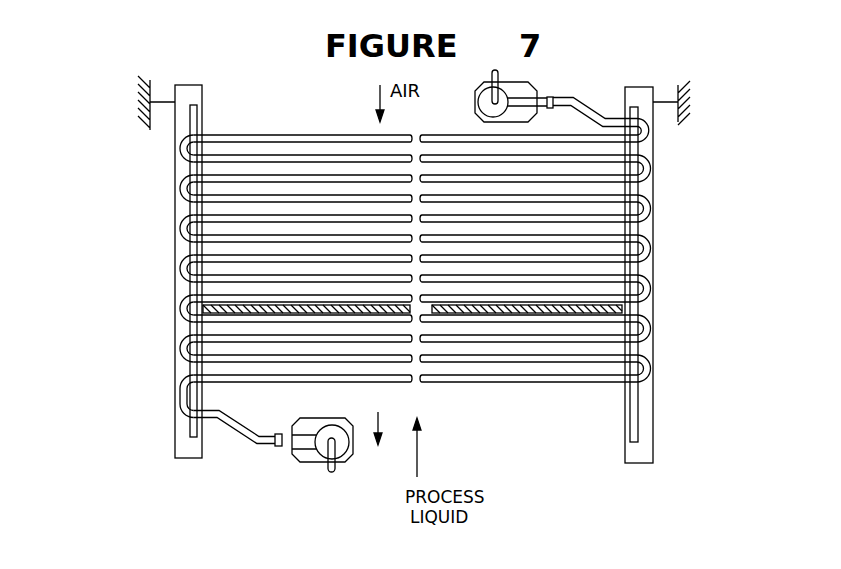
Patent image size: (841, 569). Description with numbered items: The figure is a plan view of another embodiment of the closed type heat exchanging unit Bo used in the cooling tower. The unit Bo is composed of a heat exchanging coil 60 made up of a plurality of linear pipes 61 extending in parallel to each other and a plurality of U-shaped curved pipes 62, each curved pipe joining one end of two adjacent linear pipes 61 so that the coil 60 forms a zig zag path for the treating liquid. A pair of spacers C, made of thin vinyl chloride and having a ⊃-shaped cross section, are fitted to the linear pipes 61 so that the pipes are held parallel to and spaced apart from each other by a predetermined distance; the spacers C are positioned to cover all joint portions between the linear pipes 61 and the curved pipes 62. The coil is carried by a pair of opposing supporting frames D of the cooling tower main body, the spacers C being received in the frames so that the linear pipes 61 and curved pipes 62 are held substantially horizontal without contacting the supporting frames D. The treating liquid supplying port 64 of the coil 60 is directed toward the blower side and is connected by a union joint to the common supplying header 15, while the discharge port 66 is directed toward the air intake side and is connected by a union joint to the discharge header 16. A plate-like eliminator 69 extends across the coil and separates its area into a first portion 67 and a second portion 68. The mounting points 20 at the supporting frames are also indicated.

The common supplying header 15 is at (352, 457).
The discharge header 16 is at (537, 86).
The support / wall mounting 20 is at (142, 102).
The heat exchanging coil 60 is at (452, 389).
The linear pipes 61 is at (587, 340).
The curved pipes 62 is at (645, 175).
The treating liquid supplying port 64 is at (277, 448).
The discharge port 66 is at (560, 97).
The first portion 67 is at (156, 133).
The second portion 68 is at (359, 379).
The eliminator 69 is at (490, 313).
The spacers C is at (188, 120).
The supporting frames D is at (642, 443).
The closed type heat exchanging unit Bo is at (281, 126).